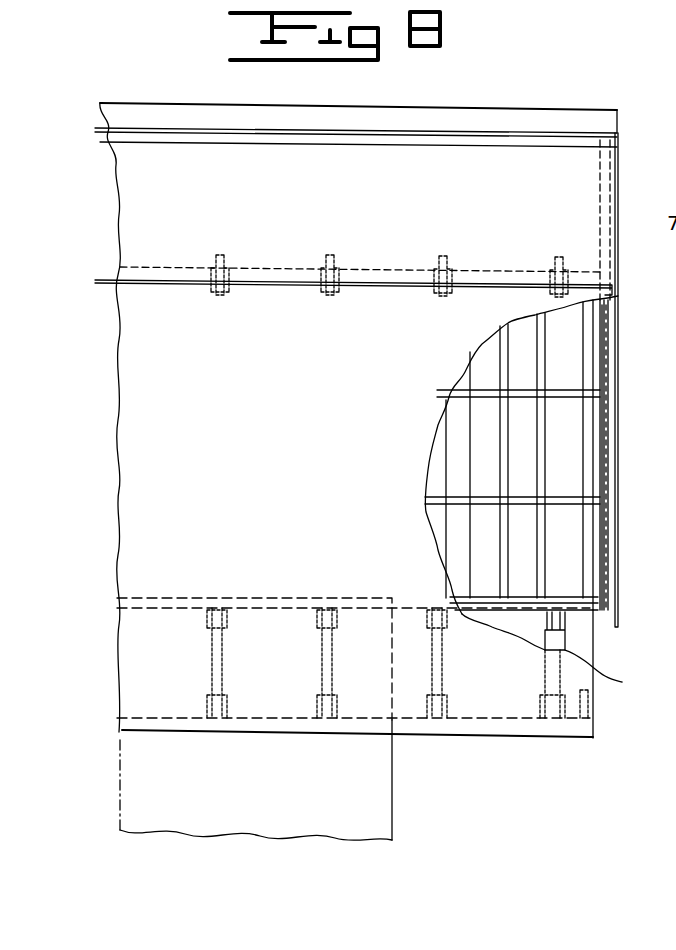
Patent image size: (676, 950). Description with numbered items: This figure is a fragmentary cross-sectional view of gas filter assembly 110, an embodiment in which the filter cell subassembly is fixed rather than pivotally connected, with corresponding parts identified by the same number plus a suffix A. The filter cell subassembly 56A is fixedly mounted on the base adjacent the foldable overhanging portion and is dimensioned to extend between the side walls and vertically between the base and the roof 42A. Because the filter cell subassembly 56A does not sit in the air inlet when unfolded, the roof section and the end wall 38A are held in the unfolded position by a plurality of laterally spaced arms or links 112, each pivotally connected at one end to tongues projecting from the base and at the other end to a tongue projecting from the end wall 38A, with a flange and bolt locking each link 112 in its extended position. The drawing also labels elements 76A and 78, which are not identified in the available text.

The roof 42A is at (455, 110).
The gas filter assembly 110 is at (574, 99).
The end wall 38A is at (142, 472).
The fasteners 76A is at (316, 300).
The filter cell subassembly 56A is at (466, 433).
The vertical column 78 is at (620, 522).
The links 112 is at (312, 652).